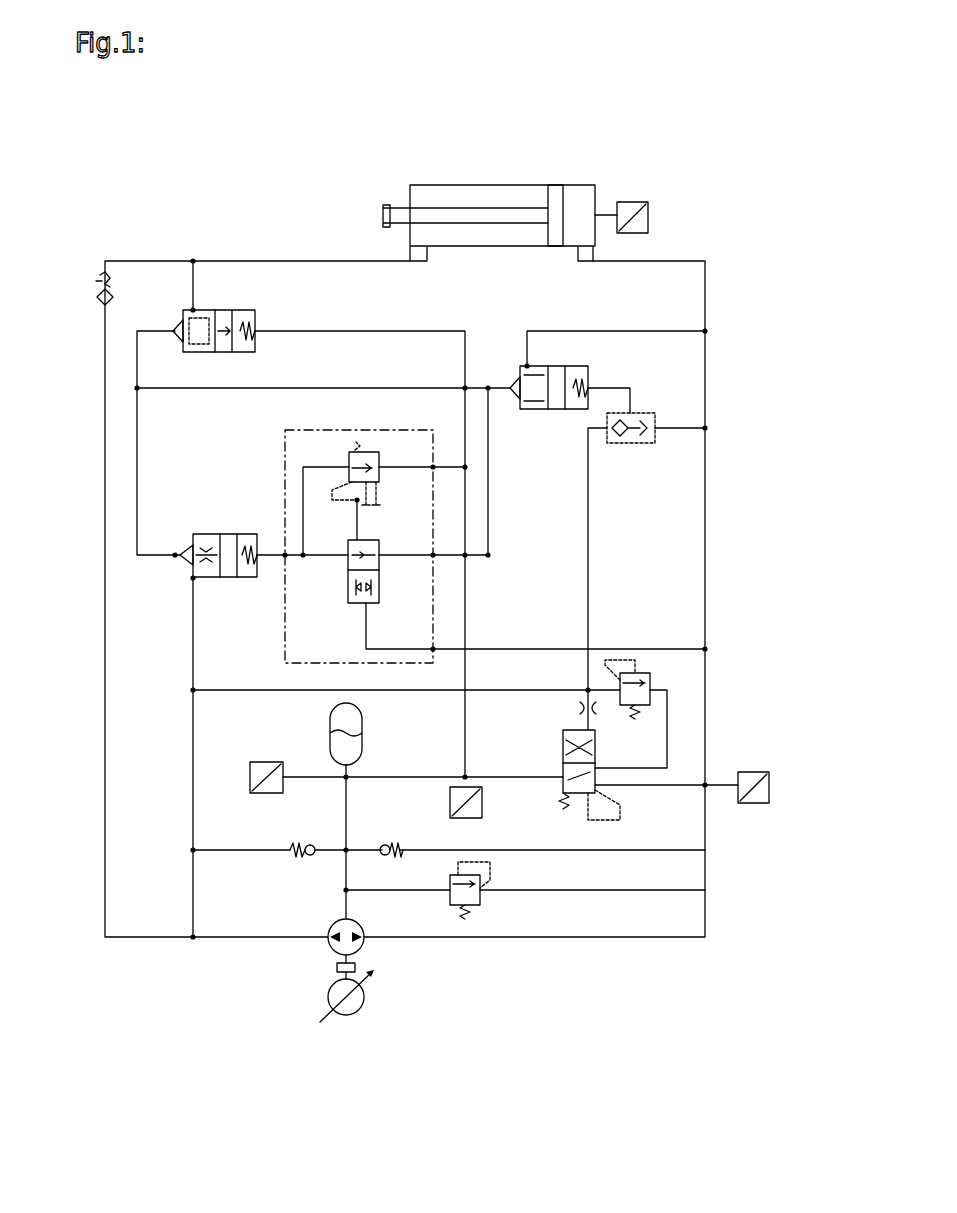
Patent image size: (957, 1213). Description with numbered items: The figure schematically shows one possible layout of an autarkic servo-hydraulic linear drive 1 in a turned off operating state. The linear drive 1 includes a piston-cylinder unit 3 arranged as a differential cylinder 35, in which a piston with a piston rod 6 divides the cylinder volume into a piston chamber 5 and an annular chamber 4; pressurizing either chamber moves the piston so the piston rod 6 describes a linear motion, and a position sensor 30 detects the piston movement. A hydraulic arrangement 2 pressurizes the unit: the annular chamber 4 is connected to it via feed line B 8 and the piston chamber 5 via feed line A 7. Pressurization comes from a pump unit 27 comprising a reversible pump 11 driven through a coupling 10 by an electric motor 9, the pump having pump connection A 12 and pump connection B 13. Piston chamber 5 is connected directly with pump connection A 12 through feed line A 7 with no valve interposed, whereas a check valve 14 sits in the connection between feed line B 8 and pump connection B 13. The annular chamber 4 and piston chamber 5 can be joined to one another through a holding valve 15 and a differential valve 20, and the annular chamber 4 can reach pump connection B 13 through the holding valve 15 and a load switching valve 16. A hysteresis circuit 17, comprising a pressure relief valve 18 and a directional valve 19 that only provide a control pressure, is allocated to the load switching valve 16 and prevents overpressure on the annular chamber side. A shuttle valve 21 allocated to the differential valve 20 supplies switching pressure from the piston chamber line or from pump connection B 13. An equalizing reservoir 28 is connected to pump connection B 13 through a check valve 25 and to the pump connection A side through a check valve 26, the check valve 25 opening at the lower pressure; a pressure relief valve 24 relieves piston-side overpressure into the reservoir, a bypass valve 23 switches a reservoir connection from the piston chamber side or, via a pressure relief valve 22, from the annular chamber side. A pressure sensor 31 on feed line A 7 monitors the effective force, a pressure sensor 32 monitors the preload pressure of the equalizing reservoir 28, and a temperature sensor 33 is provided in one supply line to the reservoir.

The autarkic servo-hydraulic linear drive 1 is at (244, 196).
The hydraulic arrangement 2 is at (750, 402).
The piston-cylinder unit 3 is at (495, 182).
The annular chamber 4 is at (452, 196).
The piston chamber 5 is at (578, 197).
The piston rod 6 is at (390, 210).
The feed line A 7 is at (569, 261).
The feed line B 8 is at (429, 262).
The electric motor 9 is at (362, 1003).
The coupling 10 is at (333, 968).
The reversible pump 11 is at (357, 922).
The pump connection A 12 is at (365, 941).
The pump connection B 13 is at (323, 940).
The check valve 14 is at (95, 280).
The holding valve 15 is at (200, 308).
The load switching valve 16 is at (197, 534).
The hysteresis circuit 17 is at (299, 435).
The pressure relief valve 18 is at (380, 442).
The directional valve 19 is at (350, 603).
The differential valve 20 is at (548, 368).
The shuttle valve 21 is at (617, 443).
The pressure relief valve 22 is at (640, 673).
The bypass valve 23 is at (563, 738).
The pressure relief valve 24 is at (480, 903).
The check valve 25 is at (295, 837).
The check valve 26 is at (385, 837).
The pump unit 27 is at (309, 980).
The equalizing reservoir 28 is at (363, 723).
The position sensor 30 is at (650, 215).
The pressure sensor 31 is at (752, 768).
The pressure sensor 32 is at (252, 762).
The temperature sensor 33 is at (482, 815).
The differential cylinder 35 is at (554, 153).